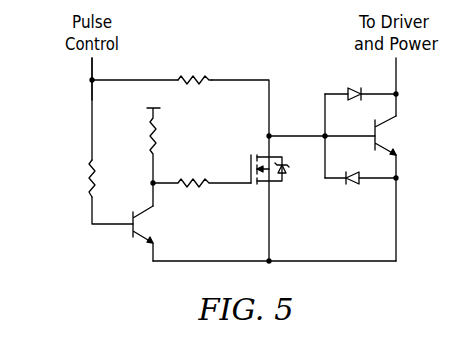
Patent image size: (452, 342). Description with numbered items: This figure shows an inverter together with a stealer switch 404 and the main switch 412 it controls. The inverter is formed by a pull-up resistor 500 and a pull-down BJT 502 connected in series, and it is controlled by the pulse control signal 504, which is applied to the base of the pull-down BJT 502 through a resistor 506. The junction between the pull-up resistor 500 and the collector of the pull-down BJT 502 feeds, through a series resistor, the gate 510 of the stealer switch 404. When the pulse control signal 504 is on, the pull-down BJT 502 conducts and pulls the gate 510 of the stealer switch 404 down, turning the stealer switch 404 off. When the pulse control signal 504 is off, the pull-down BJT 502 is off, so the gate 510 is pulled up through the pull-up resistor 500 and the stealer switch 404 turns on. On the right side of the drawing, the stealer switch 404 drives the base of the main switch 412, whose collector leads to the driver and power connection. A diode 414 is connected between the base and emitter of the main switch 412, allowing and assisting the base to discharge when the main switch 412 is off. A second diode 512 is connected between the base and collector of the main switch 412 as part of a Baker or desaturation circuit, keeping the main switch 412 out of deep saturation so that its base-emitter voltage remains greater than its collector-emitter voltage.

The stealer switch 404 is at (264, 186).
The main switch 412 is at (385, 126).
The diode 414 is at (353, 186).
The pull-up resistor 500 is at (157, 148).
The pull-down BJT 502 is at (131, 230).
The pulse control signal 504 is at (90, 62).
The resistor 506 is at (88, 171).
The gate 510 is at (246, 181).
The diode 512 is at (346, 91).